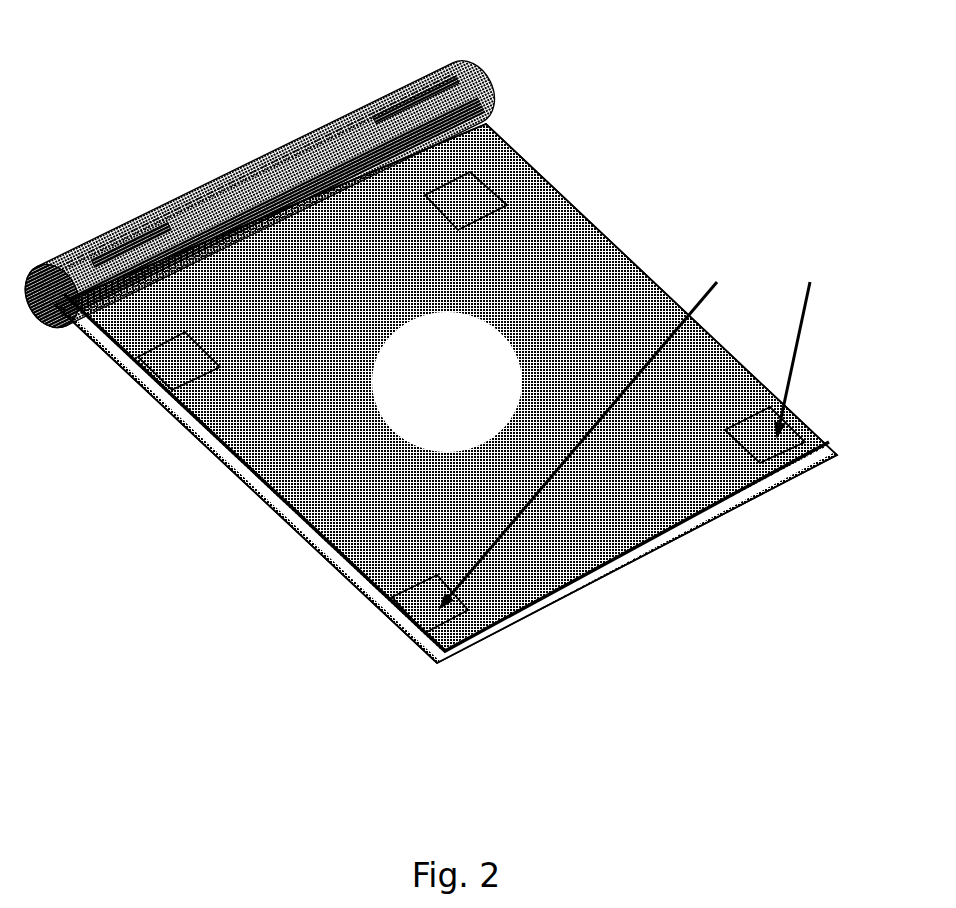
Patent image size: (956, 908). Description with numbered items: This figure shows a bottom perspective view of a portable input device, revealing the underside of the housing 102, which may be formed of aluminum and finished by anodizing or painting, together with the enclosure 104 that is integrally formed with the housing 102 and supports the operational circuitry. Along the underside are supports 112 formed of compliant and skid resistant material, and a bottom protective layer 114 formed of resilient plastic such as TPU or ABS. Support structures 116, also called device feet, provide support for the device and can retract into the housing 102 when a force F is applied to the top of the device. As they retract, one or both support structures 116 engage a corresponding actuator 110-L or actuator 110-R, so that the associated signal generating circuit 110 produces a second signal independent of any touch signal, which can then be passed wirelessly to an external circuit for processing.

The housing 102 is at (193, 463).
The enclosure 104 is at (260, 194).
The signal generating circuit 110 is at (322, 281).
The actuator 110-L is at (735, 424).
The actuator 110-R is at (413, 588).
The supports 112 is at (140, 233).
The bottom protective layer 114 is at (447, 382).
The support structures 116 is at (630, 429).